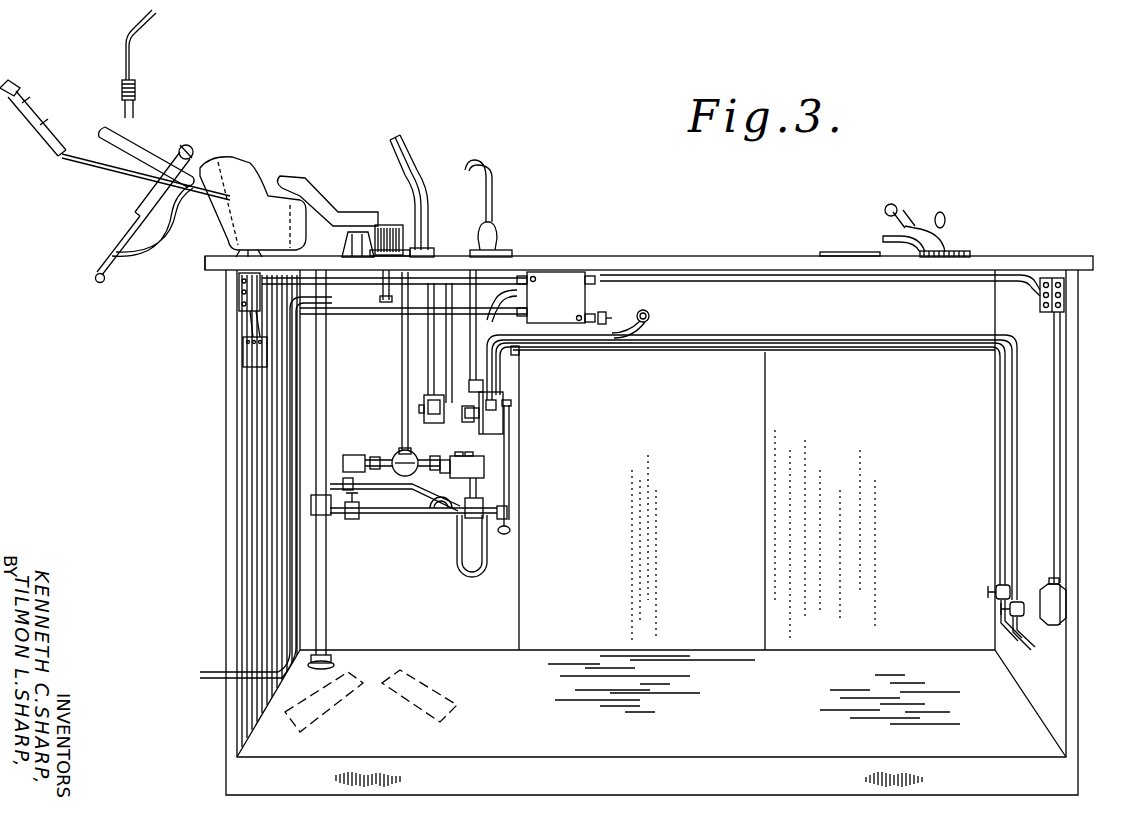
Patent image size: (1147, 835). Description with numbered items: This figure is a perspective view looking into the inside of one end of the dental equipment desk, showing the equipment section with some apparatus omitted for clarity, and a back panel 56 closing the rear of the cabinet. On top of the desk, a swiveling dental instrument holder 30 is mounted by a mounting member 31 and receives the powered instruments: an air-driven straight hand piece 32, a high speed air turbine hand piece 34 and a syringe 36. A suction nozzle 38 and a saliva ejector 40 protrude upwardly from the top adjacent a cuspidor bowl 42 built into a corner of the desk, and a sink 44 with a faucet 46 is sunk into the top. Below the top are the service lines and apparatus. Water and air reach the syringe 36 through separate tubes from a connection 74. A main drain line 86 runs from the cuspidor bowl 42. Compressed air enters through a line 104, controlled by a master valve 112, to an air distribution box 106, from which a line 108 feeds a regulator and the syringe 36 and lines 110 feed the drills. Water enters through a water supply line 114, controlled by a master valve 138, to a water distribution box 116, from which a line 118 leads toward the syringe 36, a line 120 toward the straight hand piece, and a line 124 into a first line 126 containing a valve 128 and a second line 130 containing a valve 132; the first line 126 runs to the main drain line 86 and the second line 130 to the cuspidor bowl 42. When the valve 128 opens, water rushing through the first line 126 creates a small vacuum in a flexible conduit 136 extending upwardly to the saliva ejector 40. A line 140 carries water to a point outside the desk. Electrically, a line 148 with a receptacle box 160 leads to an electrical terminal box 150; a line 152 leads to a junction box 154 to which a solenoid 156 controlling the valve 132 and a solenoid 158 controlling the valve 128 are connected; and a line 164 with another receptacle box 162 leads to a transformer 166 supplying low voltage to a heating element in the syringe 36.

The swiveling dental instrument holder 30 is at (227, 177).
The mounting member 31 is at (298, 185).
The air-driven straight hand piece 32 is at (128, 222).
The high speed air turbine hand piece 34 is at (48, 133).
The syringe 36 is at (130, 83).
The suction nozzle 38 is at (403, 137).
The saliva ejector 40 is at (495, 161).
The cuspidor bowl 42 is at (392, 222).
The sink 44 is at (848, 233).
The faucet 46 is at (918, 212).
The back panel 56 is at (770, 390).
The connection 74 is at (382, 292).
The main drain line 86 is at (328, 630).
The air supply line 104 is at (428, 357).
The air distribution box 106 is at (1054, 607).
The air line 108 is at (424, 391).
The air lines 110 is at (446, 369).
The master valve 112 is at (999, 610).
The water supply line 114 is at (497, 370).
The water distribution box 116 is at (503, 428).
The water line 118 is at (480, 413).
The water line 120 is at (484, 385).
The water line 124 is at (510, 490).
The first line 126 is at (508, 512).
The valve 128 is at (462, 514).
The second line 130 is at (511, 531).
The valve 132 is at (353, 519).
The flexible conduit 136 is at (500, 290).
The master valve 138 is at (986, 592).
The water line 140 is at (650, 321).
The electrical line 148 is at (815, 282).
The electrical terminal box 150 is at (567, 287).
The electrical line 152 is at (402, 338).
The junction box 154 is at (412, 459).
The solenoid 156 is at (367, 449).
The solenoid 158 is at (485, 466).
The receptacle box 160 is at (1064, 302).
The receptacle box 162 is at (238, 300).
The electrical line 164 is at (206, 266).
The transformer 166 is at (243, 347).